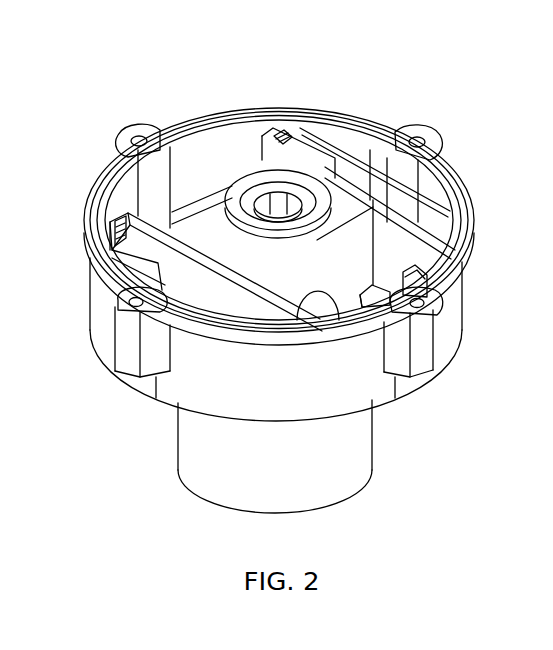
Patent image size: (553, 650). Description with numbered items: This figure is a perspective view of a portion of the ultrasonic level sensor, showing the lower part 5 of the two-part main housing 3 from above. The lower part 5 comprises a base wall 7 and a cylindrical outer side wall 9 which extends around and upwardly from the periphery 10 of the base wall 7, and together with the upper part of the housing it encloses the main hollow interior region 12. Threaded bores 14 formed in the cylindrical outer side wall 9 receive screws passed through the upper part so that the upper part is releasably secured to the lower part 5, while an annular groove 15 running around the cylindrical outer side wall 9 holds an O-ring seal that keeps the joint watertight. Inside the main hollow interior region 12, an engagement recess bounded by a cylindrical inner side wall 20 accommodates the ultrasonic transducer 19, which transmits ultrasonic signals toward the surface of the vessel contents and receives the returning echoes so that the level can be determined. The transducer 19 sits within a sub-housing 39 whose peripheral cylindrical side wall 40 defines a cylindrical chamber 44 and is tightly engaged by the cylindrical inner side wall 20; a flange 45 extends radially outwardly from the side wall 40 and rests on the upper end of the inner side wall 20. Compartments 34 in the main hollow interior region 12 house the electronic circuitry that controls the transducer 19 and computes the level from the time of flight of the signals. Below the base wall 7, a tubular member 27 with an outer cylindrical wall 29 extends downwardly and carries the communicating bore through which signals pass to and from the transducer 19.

The main housing 3 is at (355, 390).
The lower part 5 is at (460, 323).
The base wall 7 is at (190, 223).
The cylindrical outer side wall 9 is at (187, 387).
The periphery 10 is at (208, 203).
The main hollow interior region 12 is at (210, 112).
The threaded bores 14 is at (125, 131).
The annular groove 15 is at (87, 200).
The ultrasonic transducer 19 is at (262, 192).
The cylindrical inner side wall 20 is at (246, 250).
The tubular member 27 is at (360, 443).
The outer cylindrical wall 29 is at (340, 483).
The compartments 34 is at (178, 137).
The sub-housing 39 is at (296, 136).
The peripheral cylindrical side wall 40 is at (340, 167).
The cylindrical chamber 44 is at (303, 176).
The flange 45 is at (390, 120).